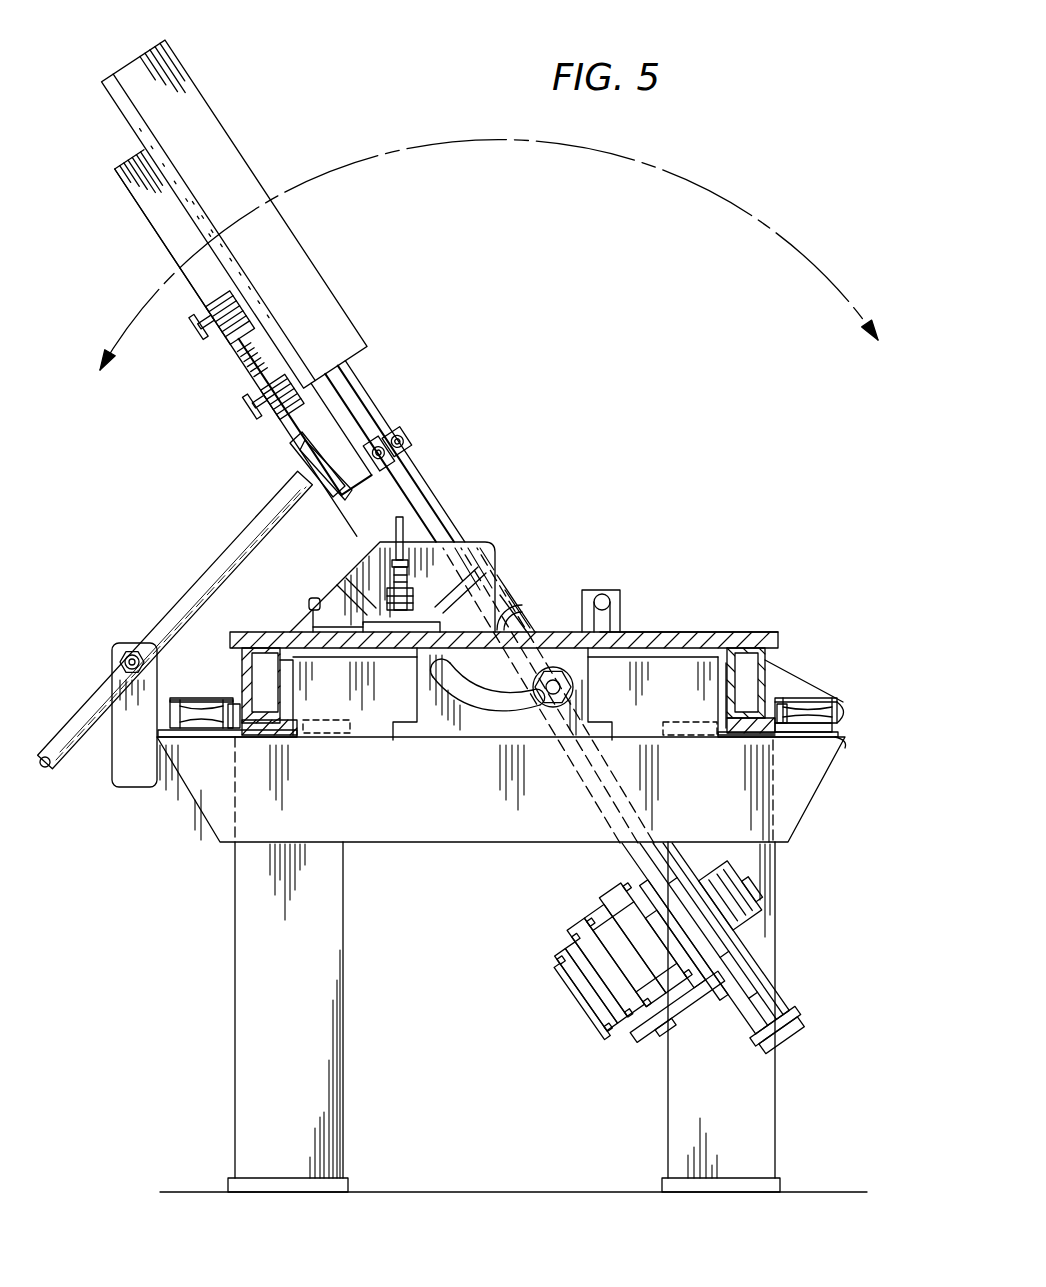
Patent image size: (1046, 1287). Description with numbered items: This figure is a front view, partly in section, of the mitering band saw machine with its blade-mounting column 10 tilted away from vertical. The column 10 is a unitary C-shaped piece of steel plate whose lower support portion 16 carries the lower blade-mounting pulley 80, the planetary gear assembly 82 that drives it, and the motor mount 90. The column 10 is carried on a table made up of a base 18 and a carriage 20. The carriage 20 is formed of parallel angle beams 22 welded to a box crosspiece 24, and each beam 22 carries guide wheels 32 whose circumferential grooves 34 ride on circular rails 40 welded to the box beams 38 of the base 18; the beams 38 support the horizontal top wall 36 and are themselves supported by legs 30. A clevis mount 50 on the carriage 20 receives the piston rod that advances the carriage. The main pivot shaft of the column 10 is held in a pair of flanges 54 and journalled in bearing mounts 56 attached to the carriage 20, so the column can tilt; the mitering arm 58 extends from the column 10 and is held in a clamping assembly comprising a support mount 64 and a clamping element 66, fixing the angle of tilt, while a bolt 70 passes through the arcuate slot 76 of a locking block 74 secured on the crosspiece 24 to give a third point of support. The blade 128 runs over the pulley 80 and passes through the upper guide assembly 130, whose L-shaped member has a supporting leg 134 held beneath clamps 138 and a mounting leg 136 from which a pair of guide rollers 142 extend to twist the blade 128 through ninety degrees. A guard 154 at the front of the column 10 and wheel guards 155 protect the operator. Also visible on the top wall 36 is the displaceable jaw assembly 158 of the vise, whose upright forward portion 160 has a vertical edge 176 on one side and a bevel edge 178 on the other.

The column 10 is at (630, 856).
The lower support portion 16 is at (788, 1055).
The base 18 is at (702, 628).
The carriage 20 is at (205, 826).
The angle beams 22 is at (300, 735).
The crosspiece 24 is at (462, 838).
The legs 30 is at (237, 952).
The guide wheels 32 is at (205, 700).
The circumferential grooves 34 is at (807, 710).
The top wall 36 is at (268, 636).
The box beams 38 is at (280, 684).
The rails 40 is at (233, 722).
The clevis mount 50 is at (612, 605).
The flanges 54 is at (433, 537).
The bearing mounts 56 is at (527, 620).
The mitering arm 58 is at (203, 575).
The support mount 64 is at (122, 757).
The clamping element 66 is at (132, 654).
The bolt 70 is at (572, 690).
The locking block 74 is at (448, 718).
The arcuate slot 76 is at (487, 712).
The lower blade-mounting pulley 80 is at (760, 892).
The planetary gear assembly 82 is at (585, 920).
The motor mount 90 is at (690, 1043).
The blade 128 is at (770, 980).
The upper guide assembly 130 is at (240, 366).
The supporting leg 134 is at (178, 232).
The mounting leg 136 is at (372, 490).
The clamps 138 is at (220, 322).
The guide rollers 142 is at (405, 453).
The guard 154 is at (300, 283).
The wheel guards 155 is at (210, 695).
The displaceable jaw assembly 158 is at (511, 618).
The upright forward portion 160 is at (363, 575).
The vertical edge 176 is at (500, 570).
The bevel edge 178 is at (316, 612).